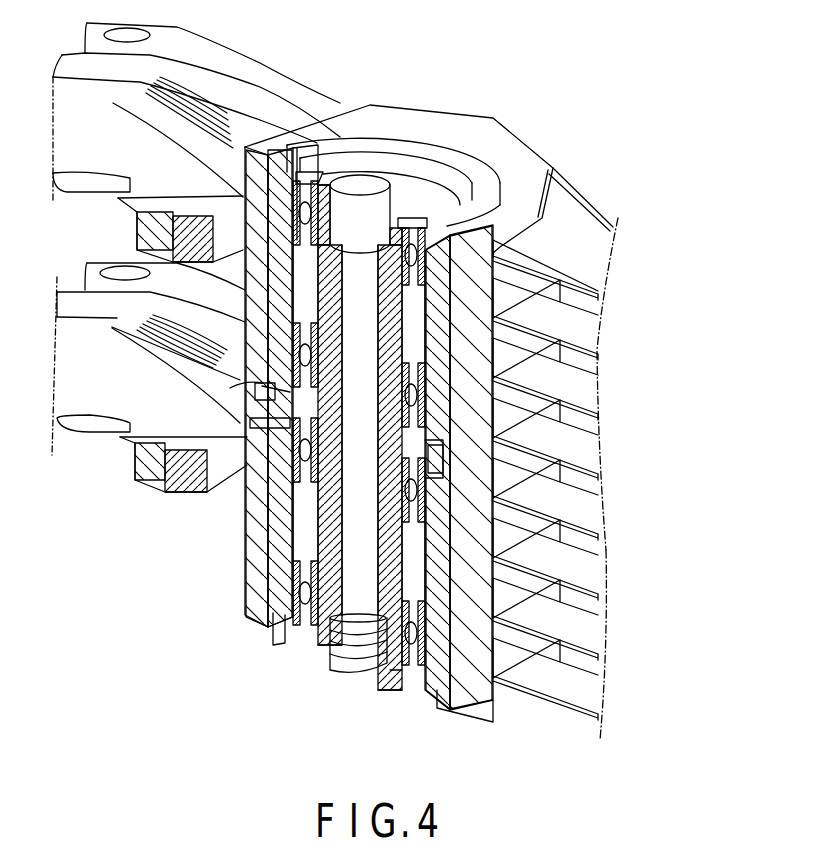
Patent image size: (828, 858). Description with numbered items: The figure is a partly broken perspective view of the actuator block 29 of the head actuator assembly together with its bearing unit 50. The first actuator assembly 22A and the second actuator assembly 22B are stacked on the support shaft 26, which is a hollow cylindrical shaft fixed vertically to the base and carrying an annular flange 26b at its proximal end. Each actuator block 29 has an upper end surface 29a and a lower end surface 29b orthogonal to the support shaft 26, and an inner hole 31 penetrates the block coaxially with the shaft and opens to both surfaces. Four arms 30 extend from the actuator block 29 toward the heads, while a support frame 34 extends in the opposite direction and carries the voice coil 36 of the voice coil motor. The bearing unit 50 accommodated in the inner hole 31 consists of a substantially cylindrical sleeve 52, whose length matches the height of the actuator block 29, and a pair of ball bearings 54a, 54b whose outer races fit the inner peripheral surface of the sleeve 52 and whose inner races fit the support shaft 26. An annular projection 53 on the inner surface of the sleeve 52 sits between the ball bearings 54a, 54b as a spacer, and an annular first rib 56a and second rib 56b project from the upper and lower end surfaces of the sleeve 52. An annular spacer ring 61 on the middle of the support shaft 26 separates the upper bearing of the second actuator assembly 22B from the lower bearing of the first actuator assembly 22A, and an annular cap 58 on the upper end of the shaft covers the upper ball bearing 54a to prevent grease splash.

The first actuator assembly 22A is at (614, 196).
The second actuator assembly 22B is at (630, 632).
The support shaft 26 is at (364, 184).
The annular flange 26b is at (308, 647).
The actuator block 29 is at (247, 577).
The upper end surface 29a is at (455, 132).
The lower end surface 29b is at (240, 388).
The arms 30 is at (588, 320).
The inner hole 31 is at (280, 212).
The support frame 34 is at (232, 63).
The voice coil 36 is at (180, 85).
The bearing unit 50 is at (462, 347).
The sleeve 52 is at (505, 278).
The annular projection 53 is at (324, 301).
The ball bearing 54a is at (297, 205).
The ball bearing 54b is at (167, 253).
The first rib 56a is at (358, 149).
The second rib 56b is at (268, 409).
The annular cap 58 is at (310, 174).
The spacer ring 61 is at (410, 448).